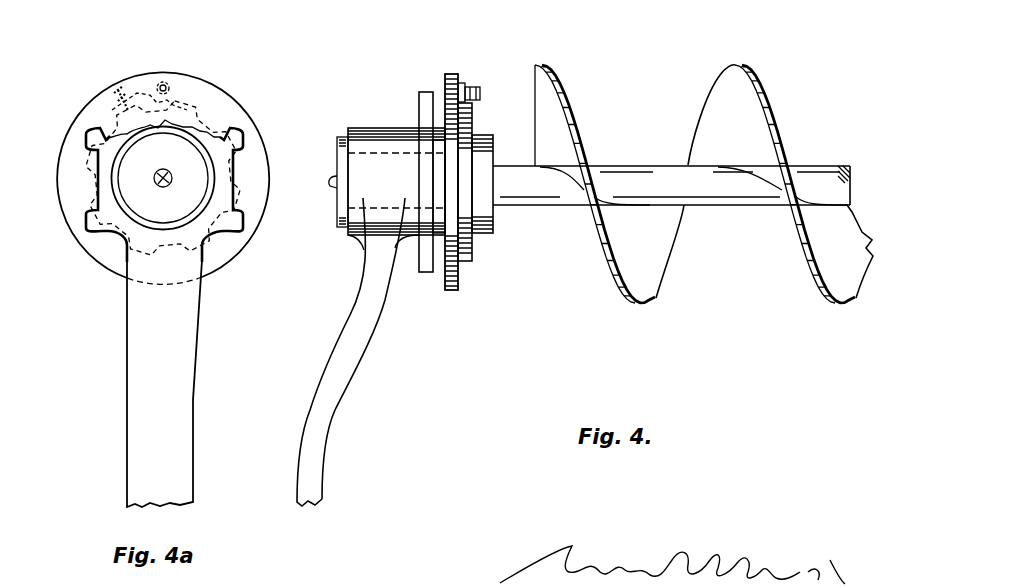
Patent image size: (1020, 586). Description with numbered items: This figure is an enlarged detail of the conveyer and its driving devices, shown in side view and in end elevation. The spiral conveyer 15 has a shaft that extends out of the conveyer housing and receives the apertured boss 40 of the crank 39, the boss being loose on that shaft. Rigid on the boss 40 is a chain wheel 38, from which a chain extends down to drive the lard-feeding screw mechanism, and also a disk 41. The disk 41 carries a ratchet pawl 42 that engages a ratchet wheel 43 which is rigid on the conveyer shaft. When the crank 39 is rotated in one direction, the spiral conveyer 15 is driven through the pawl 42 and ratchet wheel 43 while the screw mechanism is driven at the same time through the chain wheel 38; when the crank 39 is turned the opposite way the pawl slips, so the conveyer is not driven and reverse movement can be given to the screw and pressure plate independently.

In FIG. 4, the spiral conveyer 15 is at (683, 184).
In FIG. 4A, the chain wheel 38 is at (88, 228).
In FIG. 4, the chain wheel 38 is at (423, 93).
In FIG. 4A, the crank 39 is at (164, 383).
In FIG. 4, the crank 39 is at (347, 349).
In FIG. 4, the apertured boss 40 is at (387, 189).
In FIG. 4A, the disk 41 is at (217, 87).
In FIG. 4, the disk 41 is at (452, 290).
In FIG. 4A, the ratchet pawl 42 is at (144, 93).
In FIG. 4, the ratchet pawl 42 is at (462, 82).
In FIG. 4A, the ratchet wheel 43 is at (238, 167).
In FIG. 4, the ratchet wheel 43 is at (465, 262).